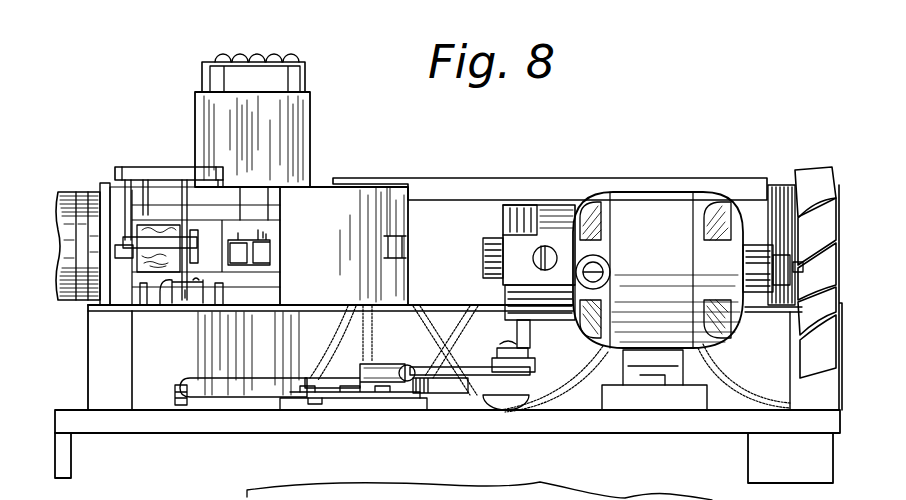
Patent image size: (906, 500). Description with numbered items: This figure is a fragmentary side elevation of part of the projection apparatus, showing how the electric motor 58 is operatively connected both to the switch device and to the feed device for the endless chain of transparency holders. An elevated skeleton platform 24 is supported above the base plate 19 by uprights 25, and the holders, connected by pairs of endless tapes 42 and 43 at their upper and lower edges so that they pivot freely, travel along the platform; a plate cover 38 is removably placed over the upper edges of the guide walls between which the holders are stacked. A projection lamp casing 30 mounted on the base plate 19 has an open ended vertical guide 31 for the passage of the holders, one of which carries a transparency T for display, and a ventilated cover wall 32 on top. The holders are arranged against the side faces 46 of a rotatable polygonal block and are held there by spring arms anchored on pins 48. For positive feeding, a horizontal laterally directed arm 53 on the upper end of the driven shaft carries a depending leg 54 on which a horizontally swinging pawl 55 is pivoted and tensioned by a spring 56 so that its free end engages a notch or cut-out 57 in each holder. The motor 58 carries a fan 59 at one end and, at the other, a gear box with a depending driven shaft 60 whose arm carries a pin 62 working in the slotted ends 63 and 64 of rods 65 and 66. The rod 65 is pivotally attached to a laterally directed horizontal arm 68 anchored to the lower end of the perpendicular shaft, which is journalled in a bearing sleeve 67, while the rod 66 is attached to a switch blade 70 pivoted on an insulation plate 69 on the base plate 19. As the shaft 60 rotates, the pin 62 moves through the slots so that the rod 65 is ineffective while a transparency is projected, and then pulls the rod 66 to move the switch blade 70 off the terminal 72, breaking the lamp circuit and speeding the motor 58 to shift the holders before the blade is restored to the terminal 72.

The base plate 19 is at (163, 423).
The elevated skeleton platform 24 is at (330, 312).
The uprights 25 is at (123, 373).
The projection lamp casing 30 is at (132, 167).
The open ended vertical guide 31 is at (103, 200).
The ventilated cover wall 32 is at (296, 61).
The plate cover 38 is at (479, 178).
The endless tape 42 is at (175, 198).
The endless tape 43 is at (247, 215).
The side face of polygonal block 46 is at (155, 306).
The pins 48 is at (203, 307).
The horizontal laterally directed arm 53 is at (150, 172).
The depending leg 54 is at (105, 183).
The horizontally swinging pawl 55 is at (186, 232).
The spring 56 is at (153, 235).
The notch or cut-out 57 is at (193, 258).
The electric motor 58 is at (653, 193).
The fan 59 is at (811, 168).
The depending perpendicular driven shaft 60 is at (531, 335).
The pin 62 is at (512, 347).
The slotted end of rod 63 is at (467, 383).
The slotted end of rod 64 is at (460, 374).
The rod 65 is at (253, 382).
The rod 66 is at (346, 376).
The bearing sleeve 67 is at (200, 351).
The laterally directed horizontal arm 68 is at (175, 397).
The insulation plate 69 is at (335, 408).
The switch blade 70 is at (369, 402).
The terminal 72 is at (297, 402).
The transparency T is at (270, 249).